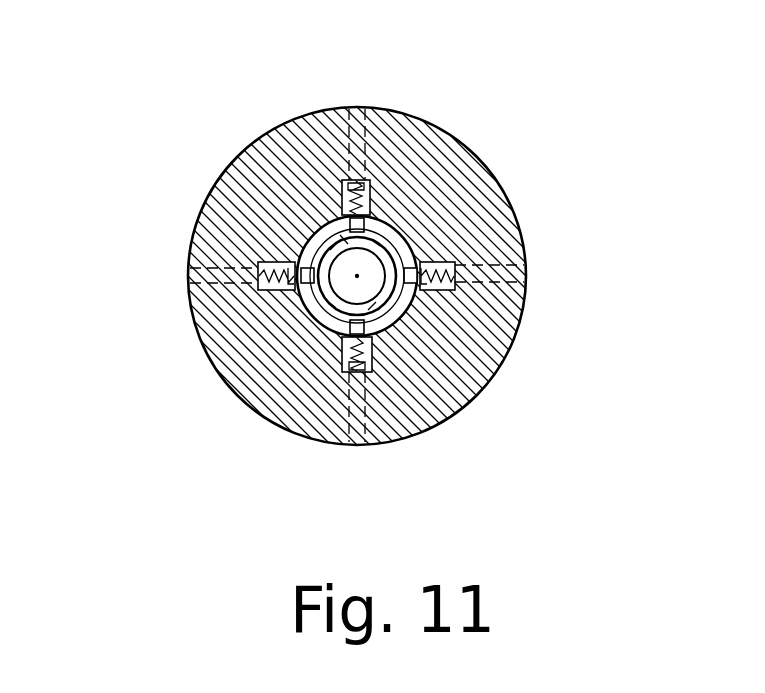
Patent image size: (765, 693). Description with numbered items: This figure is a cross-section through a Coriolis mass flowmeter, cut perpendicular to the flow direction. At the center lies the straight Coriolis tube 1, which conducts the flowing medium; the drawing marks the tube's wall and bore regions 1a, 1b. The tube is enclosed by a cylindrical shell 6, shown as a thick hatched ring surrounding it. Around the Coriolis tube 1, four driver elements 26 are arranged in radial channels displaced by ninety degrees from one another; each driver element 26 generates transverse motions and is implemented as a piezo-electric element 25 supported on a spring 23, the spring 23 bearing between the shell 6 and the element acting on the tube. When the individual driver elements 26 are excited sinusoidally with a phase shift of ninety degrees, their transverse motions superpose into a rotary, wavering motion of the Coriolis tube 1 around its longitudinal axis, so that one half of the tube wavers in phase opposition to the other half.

The cylindrical shell 6 is at (443, 170).
The driver elements 26 is at (343, 98).
The piezo-electric element 25 is at (368, 212).
The spring 23 is at (462, 292).
The Coriolis tube 1 is at (388, 246).
The bearing ring 1a is at (312, 230).
The bearing outer ring 1b is at (300, 243).